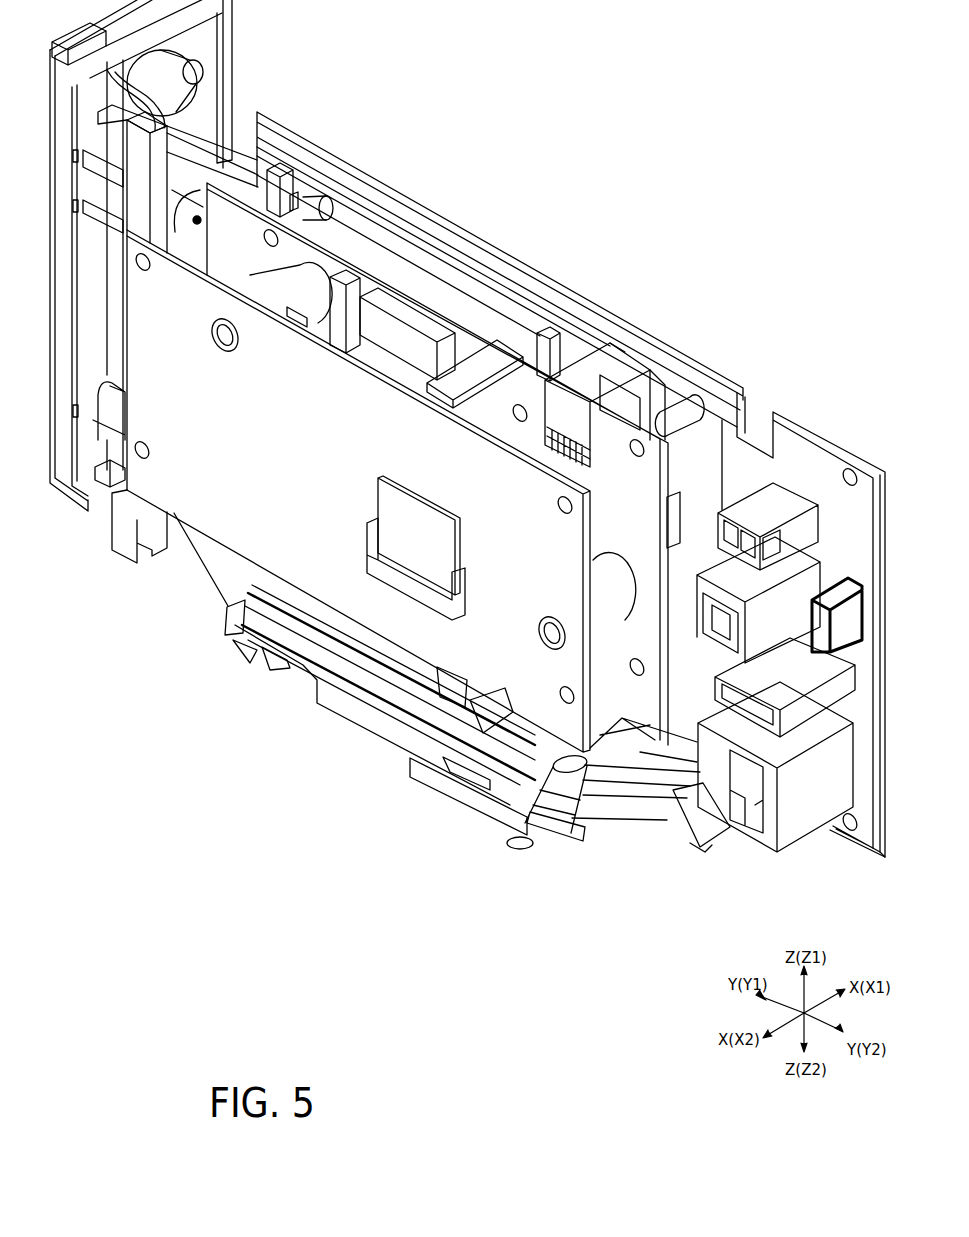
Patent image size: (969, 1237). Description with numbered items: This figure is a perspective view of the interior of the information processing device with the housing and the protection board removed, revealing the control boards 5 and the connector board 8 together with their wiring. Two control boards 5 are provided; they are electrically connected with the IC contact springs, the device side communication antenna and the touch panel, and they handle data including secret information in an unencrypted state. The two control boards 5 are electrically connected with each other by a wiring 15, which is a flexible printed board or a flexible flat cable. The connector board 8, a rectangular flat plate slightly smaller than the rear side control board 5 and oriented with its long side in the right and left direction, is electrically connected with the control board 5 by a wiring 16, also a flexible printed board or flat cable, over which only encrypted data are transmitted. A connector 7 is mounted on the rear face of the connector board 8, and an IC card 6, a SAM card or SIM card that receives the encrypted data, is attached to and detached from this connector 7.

The control board 5 is at (349, 160).
The IC card 6 is at (460, 546).
The connector 7 is at (367, 538).
The connector board 8 is at (174, 513).
The wiring 15 is at (577, 355).
The wiring 16 is at (478, 392).